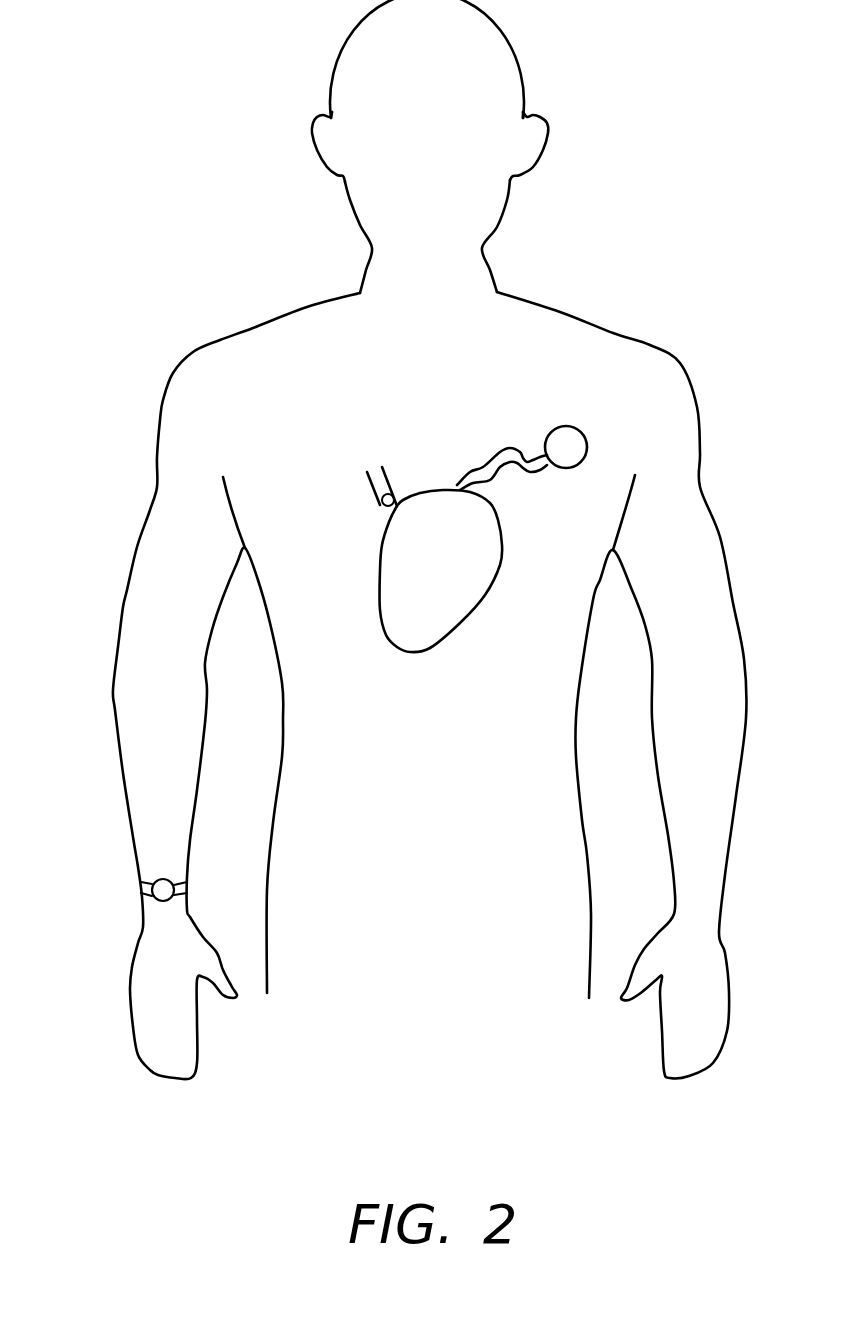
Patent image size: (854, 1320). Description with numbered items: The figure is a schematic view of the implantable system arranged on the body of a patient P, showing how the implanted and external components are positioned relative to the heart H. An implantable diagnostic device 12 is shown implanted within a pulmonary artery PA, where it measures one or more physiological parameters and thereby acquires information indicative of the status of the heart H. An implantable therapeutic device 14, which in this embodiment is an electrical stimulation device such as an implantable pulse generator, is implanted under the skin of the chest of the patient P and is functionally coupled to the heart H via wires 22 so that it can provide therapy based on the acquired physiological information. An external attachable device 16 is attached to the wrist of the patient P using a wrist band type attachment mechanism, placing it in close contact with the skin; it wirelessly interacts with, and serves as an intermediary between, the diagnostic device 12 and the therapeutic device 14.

The patient P is at (587, 320).
The heart H is at (438, 615).
The pulmonary artery PA is at (383, 477).
The implantable diagnostic device 12 is at (382, 501).
The implantable therapeutic device 14 is at (562, 425).
The wires 22 is at (527, 462).
The external attachable device 16 is at (158, 879).